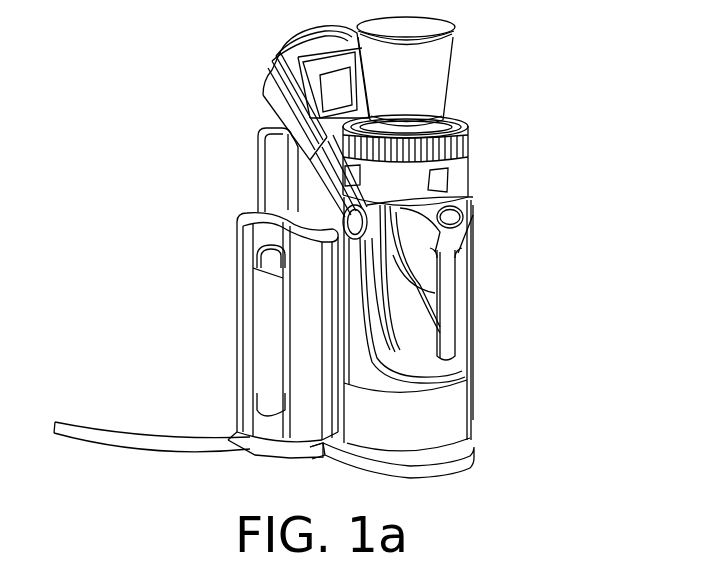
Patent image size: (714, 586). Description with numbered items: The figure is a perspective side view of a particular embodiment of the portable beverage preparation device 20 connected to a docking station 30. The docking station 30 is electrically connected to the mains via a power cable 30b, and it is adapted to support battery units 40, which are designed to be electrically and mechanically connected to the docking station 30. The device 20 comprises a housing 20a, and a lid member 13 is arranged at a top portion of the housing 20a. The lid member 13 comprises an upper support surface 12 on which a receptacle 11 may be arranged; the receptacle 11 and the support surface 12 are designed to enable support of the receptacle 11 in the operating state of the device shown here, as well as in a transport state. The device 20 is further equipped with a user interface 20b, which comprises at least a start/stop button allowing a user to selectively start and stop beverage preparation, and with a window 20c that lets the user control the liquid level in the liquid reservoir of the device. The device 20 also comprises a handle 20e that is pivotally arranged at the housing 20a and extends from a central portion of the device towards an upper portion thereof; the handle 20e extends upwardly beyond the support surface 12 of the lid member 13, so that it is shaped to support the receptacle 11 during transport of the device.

The receptacle 11 is at (460, 72).
The upper support surface 12 is at (458, 108).
The lid member 13 is at (470, 170).
The portable beverage preparation device 20 is at (492, 245).
The housing 20a is at (470, 333).
The user interface 20b is at (462, 214).
The window 20c is at (447, 313).
The handle 20e is at (286, 60).
The docking station 30 is at (262, 108).
The power cable 30b is at (98, 437).
The battery units 40 is at (248, 240).